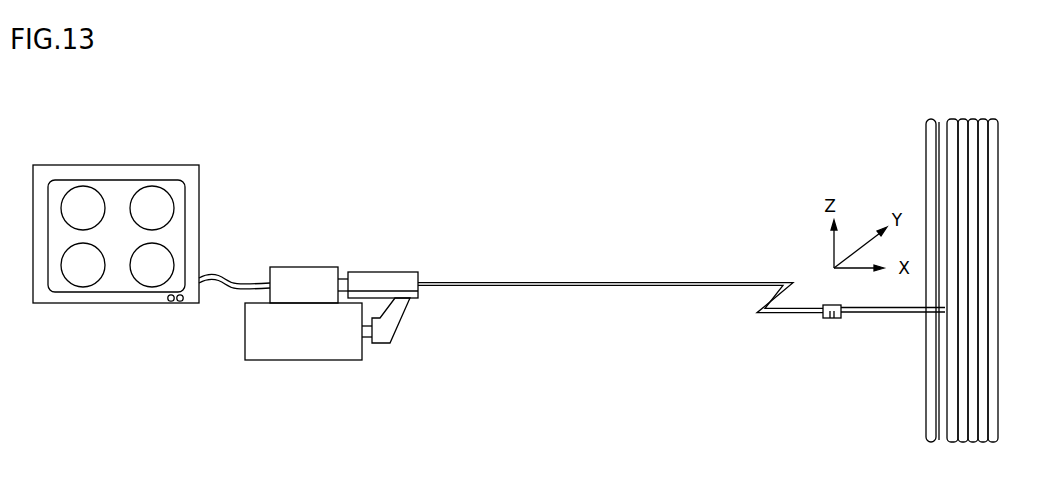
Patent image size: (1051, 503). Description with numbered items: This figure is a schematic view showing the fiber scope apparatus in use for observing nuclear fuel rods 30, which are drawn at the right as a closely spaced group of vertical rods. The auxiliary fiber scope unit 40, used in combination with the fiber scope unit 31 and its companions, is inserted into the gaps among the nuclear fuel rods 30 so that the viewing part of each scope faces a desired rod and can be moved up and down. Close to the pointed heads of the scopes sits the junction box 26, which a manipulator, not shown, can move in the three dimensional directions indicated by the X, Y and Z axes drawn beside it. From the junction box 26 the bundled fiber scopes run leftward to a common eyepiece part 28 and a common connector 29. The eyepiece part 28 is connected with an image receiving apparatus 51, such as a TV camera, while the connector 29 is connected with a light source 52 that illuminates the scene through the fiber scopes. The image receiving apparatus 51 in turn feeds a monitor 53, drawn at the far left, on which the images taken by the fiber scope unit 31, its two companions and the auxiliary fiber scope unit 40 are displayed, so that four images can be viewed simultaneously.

The monitor 53 is at (128, 165).
The image receiving apparatus 51 is at (300, 272).
The light source 52 is at (303, 343).
The eyepiece part 28 is at (381, 279).
The connector 29 is at (393, 323).
The auxiliary fiber scope unit 40 is at (863, 305).
The junction box 26 is at (827, 318).
The fiber scope unit 31 is at (865, 313).
The nuclear fuel rods 30 is at (928, 133).